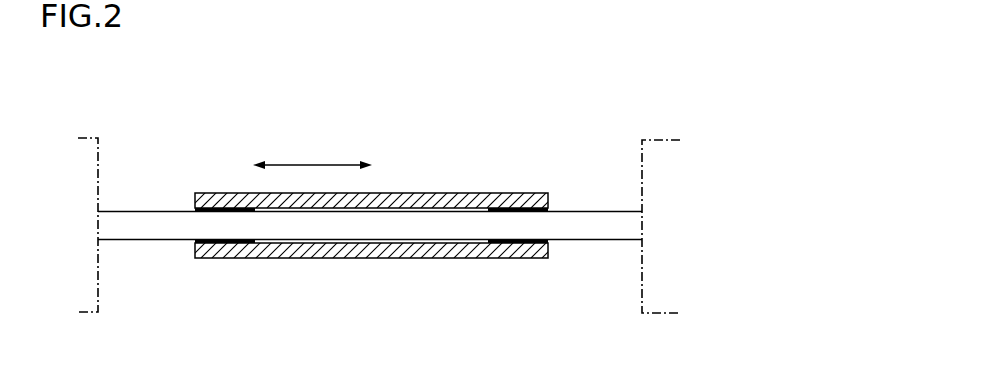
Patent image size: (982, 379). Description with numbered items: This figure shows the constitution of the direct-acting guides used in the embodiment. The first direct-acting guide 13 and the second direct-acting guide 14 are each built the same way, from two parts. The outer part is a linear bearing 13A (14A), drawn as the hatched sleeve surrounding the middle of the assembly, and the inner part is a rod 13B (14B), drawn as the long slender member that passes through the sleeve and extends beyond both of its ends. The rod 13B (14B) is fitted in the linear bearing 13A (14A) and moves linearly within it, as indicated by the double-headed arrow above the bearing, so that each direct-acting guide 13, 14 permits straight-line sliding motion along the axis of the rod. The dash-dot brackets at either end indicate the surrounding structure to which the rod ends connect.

The first direct-acting guide 13 is at (377, 200).
The second direct-acting guide 14 is at (377, 200).
The linear bearing 13A is at (374, 271).
The linear bearing 14A is at (302, 258).
The rod 13B is at (370, 277).
The rod 14B is at (592, 232).